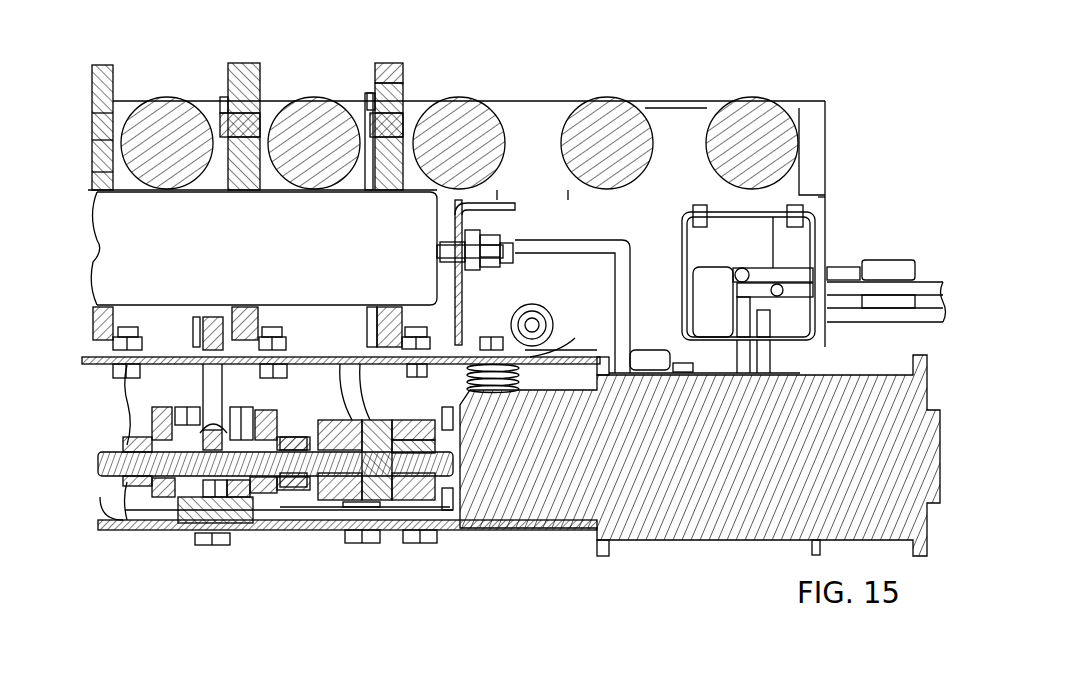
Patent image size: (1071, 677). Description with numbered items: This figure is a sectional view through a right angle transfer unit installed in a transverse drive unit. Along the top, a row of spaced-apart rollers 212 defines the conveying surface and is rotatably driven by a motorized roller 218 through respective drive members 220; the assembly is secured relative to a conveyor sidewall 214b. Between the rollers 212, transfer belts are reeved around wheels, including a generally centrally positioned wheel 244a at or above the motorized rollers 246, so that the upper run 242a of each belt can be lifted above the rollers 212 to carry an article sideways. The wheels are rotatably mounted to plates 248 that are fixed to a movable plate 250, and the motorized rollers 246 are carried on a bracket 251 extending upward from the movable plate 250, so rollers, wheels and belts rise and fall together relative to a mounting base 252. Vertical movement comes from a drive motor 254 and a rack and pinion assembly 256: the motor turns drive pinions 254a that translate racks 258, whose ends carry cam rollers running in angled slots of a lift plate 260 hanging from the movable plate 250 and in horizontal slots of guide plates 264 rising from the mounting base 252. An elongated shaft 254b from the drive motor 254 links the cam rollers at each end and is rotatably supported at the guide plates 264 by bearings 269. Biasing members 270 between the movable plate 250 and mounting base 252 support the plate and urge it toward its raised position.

The rollers 212 is at (158, 110).
The conveyor sidewall 214b is at (682, 102).
The upper run 242a is at (390, 68).
The wheel 244a is at (232, 88).
The motorized roller 246 is at (130, 245).
The plate 248 is at (367, 103).
The bracket 251 is at (470, 303).
The biasing member 270 is at (567, 354).
The motorized roller 218 is at (651, 352).
The movable plate 250 is at (147, 380).
The lift plate 260 is at (212, 383).
The rack 258 is at (157, 418).
The shaft 254b is at (103, 498).
The drive pinion 254a is at (170, 492).
The rack and pinion assembly 256 is at (170, 562).
The guide plate 264 is at (185, 524).
The bearing 269 is at (212, 498).
The mounting base 252 is at (283, 531).
The drive member 220 is at (365, 398).
The drive motor 254 is at (705, 522).